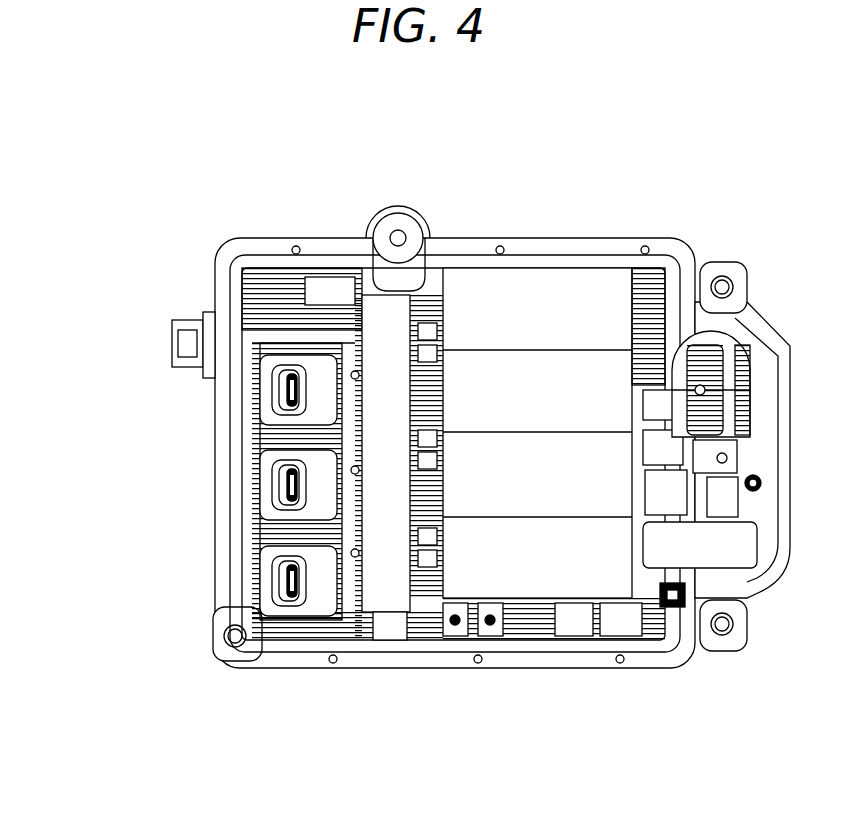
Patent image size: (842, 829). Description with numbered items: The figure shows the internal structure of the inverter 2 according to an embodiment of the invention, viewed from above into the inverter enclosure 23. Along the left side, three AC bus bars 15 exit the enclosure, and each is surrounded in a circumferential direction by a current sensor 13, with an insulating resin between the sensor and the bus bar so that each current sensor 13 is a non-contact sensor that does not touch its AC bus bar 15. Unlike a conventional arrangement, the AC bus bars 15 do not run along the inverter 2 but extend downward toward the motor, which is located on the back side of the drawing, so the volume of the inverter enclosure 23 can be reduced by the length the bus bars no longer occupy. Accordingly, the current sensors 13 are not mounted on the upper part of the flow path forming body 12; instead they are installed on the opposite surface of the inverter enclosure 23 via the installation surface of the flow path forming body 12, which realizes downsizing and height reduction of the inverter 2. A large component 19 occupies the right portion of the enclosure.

The inverter 2 is at (362, 384).
The flow path forming body 12 is at (372, 307).
The current sensor 13 is at (322, 398).
The AC bus bar 15 is at (293, 398).
The circuit board 19 is at (513, 335).
The inverter enclosure 23 is at (688, 665).